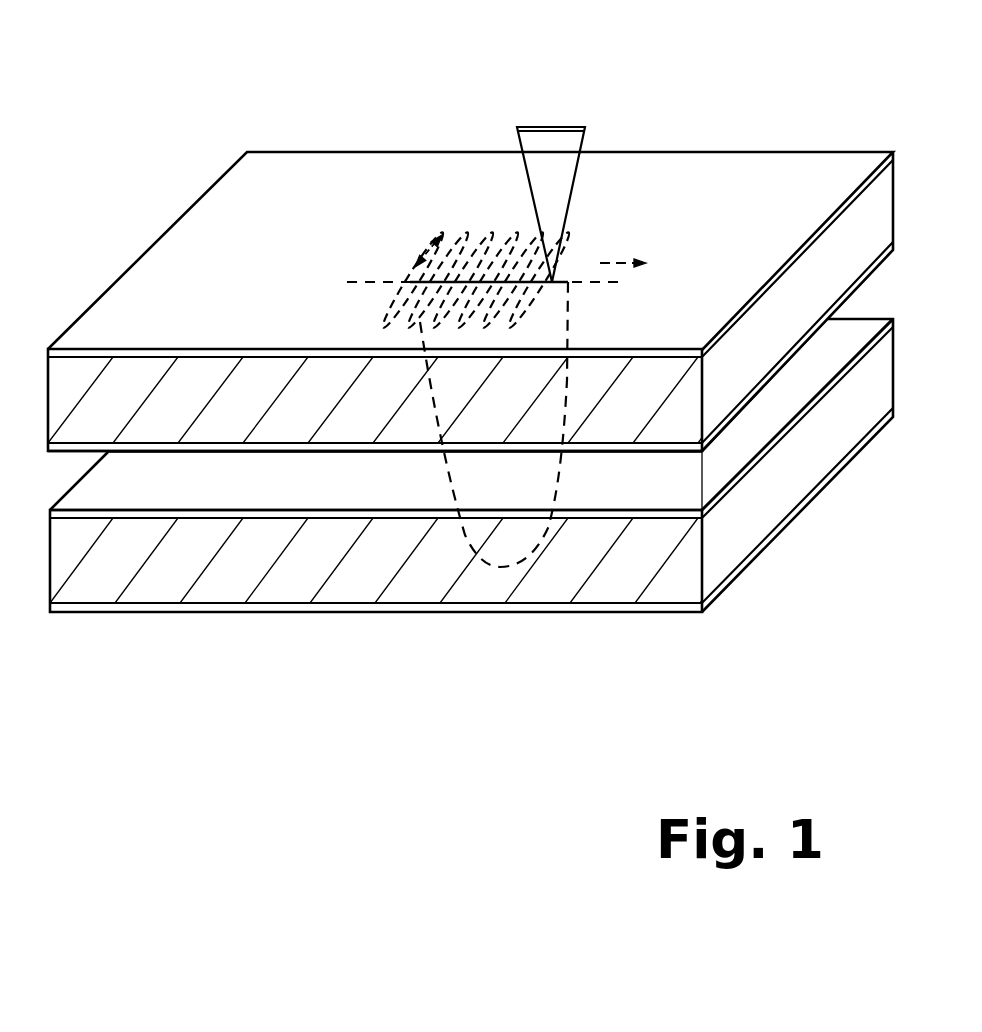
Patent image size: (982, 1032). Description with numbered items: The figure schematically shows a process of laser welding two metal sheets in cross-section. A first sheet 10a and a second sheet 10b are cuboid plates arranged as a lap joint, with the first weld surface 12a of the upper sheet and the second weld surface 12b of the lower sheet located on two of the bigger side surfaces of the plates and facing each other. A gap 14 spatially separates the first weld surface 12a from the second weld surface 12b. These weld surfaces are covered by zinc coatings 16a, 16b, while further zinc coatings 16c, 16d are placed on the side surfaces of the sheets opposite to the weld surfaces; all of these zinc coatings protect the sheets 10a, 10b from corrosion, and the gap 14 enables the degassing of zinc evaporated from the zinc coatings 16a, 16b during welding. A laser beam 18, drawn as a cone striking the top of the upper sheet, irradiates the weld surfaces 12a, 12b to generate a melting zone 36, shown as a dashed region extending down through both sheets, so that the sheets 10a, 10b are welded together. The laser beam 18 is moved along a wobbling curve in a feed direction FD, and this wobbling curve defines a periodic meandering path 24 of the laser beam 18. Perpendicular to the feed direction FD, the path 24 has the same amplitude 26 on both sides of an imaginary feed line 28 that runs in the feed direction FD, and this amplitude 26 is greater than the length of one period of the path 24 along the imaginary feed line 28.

The first sheet 10a is at (737, 130).
The second sheet 10b is at (553, 622).
The first weld surface 12a is at (702, 516).
The second weld surface 12b is at (93, 498).
The gap 14 is at (750, 450).
The zinc coating 16a is at (223, 447).
The zinc coating 16b is at (148, 518).
The zinc coating 16c is at (152, 352).
The zinc coating 16d is at (78, 612).
The laser beam 18 is at (573, 140).
The path 24 is at (477, 233).
The amplitude 26 is at (435, 238).
The imaginary feed line 28 is at (355, 282).
The melting zone 36 is at (543, 405).
The feed direction FD is at (617, 263).